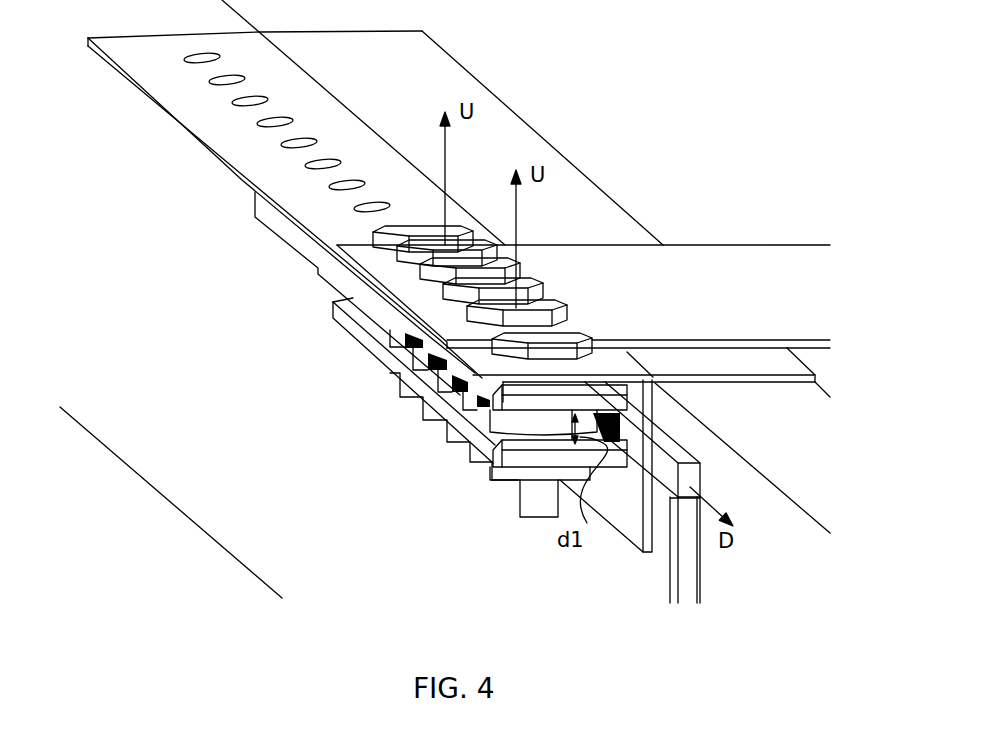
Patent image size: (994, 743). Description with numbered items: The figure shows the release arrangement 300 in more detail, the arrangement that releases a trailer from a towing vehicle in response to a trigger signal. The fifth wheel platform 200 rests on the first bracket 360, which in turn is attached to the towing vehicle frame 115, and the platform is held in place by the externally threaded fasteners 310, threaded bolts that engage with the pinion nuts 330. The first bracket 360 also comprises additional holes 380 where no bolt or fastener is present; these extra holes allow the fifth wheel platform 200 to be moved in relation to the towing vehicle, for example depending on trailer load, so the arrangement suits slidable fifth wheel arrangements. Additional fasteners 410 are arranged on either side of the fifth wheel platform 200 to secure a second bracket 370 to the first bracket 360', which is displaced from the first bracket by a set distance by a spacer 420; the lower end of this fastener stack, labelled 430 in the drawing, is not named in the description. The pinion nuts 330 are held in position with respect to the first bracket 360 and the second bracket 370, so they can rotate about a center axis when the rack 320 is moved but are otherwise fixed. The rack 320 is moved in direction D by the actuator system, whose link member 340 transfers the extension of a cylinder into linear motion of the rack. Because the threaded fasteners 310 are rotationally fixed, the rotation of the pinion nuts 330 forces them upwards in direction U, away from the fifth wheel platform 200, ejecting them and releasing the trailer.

The towing vehicle frame 115 is at (181, 262).
The fifth wheel platform 200 is at (778, 293).
The release arrangement 300 is at (690, 151).
The externally threaded fasteners 310 is at (470, 243).
The rack 320 is at (655, 457).
The pinion nuts 330 is at (452, 383).
The link member 340 is at (677, 567).
The first bracket 360 is at (285, 204).
The first bracket 360' is at (354, 293).
The second bracket 370 is at (365, 338).
The additional holes 380 is at (312, 105).
The additional fasteners 410 is at (415, 233).
The spacer 420 is at (512, 422).
The bolt head 430 is at (513, 478).